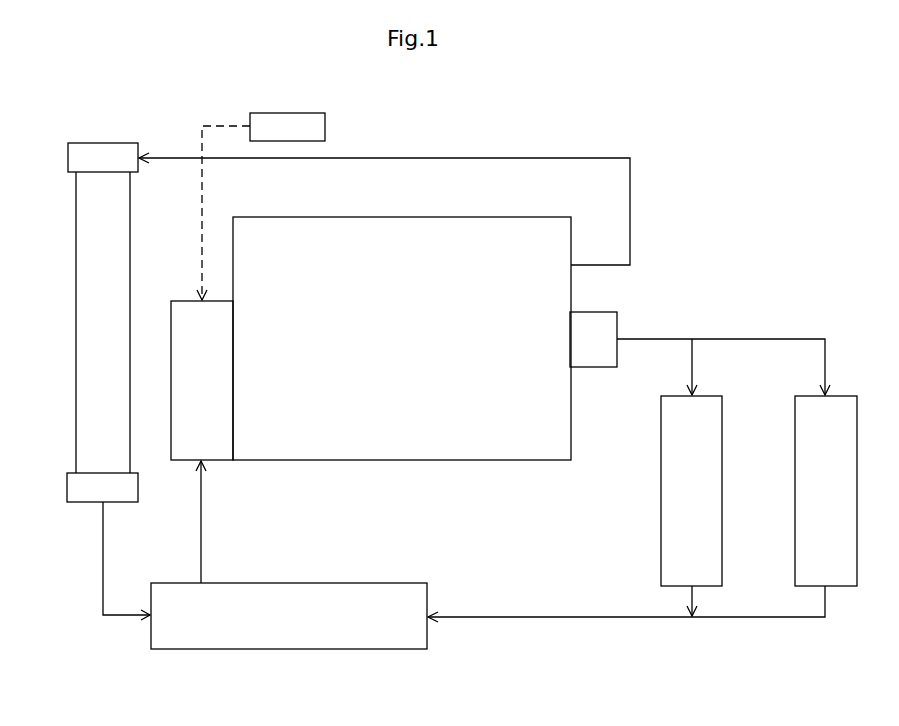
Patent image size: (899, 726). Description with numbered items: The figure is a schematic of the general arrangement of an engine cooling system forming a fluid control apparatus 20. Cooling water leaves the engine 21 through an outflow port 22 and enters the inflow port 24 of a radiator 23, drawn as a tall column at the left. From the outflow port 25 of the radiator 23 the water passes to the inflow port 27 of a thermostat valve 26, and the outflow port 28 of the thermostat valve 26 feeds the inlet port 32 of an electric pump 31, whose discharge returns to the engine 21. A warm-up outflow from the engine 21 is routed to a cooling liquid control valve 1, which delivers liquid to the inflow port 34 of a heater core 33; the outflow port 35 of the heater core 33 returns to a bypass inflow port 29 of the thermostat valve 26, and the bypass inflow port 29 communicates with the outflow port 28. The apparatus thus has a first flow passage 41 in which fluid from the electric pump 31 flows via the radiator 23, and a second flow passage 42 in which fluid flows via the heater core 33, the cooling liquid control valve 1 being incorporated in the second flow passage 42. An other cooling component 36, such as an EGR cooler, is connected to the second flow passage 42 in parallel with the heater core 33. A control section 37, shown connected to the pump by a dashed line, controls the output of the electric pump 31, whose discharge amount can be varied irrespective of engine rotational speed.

The cooling liquid control valve 1 is at (603, 313).
The fluid control apparatus 20 is at (676, 120).
The engine 21 is at (301, 217).
The outflow port 22 is at (573, 264).
The radiator 23 is at (82, 305).
The inflow port 24 is at (139, 146).
The outflow port 25 is at (103, 503).
The thermostat valve 26 is at (342, 590).
The inflow port 27 is at (150, 620).
The outflow port 28 is at (203, 582).
The bypass inflow port 29 is at (430, 621).
The electric pump 31 is at (183, 300).
The inlet port 32 is at (204, 463).
The heater core 33 is at (800, 437).
The inflow port 34 is at (825, 394).
The outflow port 35 is at (827, 588).
The other cooling component 36 is at (667, 519).
The control section 37 is at (325, 127).
The first flow passage 41 is at (482, 158).
The second flow passage 42 is at (745, 339).